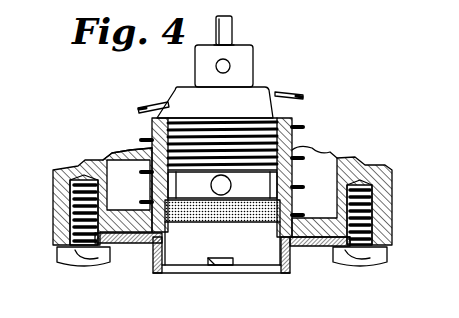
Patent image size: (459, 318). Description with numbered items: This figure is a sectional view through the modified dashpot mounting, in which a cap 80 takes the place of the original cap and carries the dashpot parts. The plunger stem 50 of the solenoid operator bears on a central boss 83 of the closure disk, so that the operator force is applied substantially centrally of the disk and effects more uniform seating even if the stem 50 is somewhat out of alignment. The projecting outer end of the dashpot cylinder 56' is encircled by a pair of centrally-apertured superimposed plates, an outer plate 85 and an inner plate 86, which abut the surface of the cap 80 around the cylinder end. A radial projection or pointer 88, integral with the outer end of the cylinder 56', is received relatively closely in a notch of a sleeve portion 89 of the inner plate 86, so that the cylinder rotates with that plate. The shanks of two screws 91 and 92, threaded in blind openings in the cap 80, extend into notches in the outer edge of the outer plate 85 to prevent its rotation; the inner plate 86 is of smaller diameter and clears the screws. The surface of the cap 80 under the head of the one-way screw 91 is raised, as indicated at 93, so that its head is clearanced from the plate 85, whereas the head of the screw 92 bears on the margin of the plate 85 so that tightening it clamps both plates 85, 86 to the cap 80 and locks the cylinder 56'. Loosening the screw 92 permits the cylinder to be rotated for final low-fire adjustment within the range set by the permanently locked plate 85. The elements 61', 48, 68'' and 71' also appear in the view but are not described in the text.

The plunger stem 50 is at (233, 24).
The central boss 83 is at (234, 42).
The terminal block 61' is at (251, 66).
The cylinder 56' is at (215, 188).
The lead pin 48 is at (140, 109).
The cap 80 is at (350, 168).
The aperture 68'' is at (241, 186).
The inner plate 86 is at (312, 235).
The gasket 71' is at (222, 222).
The raised surface 93 is at (55, 252).
The screw 91 is at (78, 256).
The sleeve portion 89 is at (156, 248).
The pointer 88 is at (215, 268).
The outer plate 85 is at (305, 247).
The screw 92 is at (347, 255).